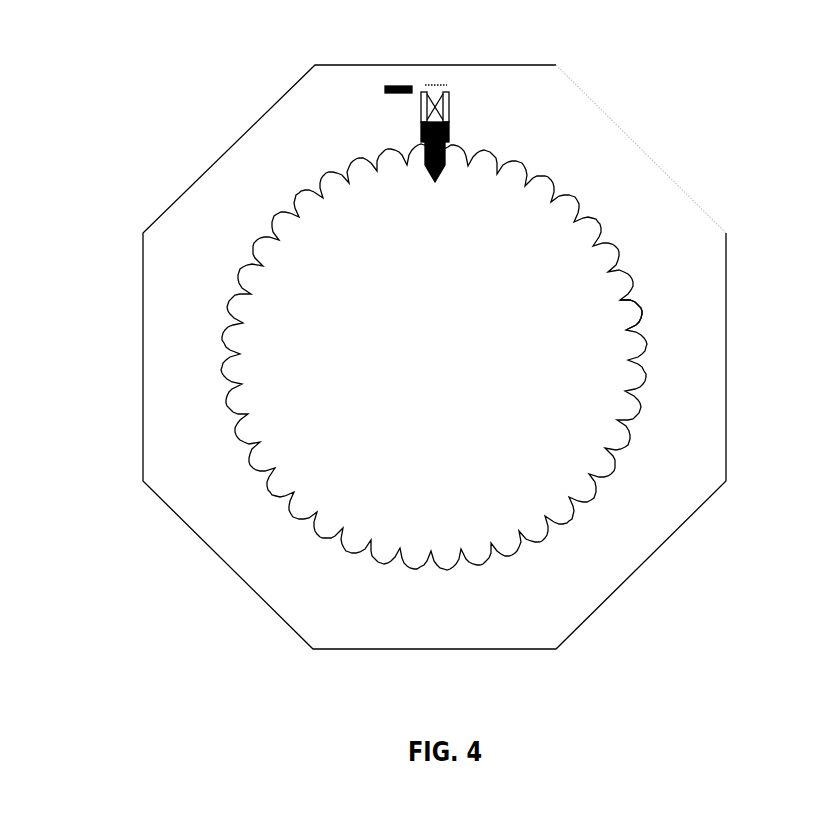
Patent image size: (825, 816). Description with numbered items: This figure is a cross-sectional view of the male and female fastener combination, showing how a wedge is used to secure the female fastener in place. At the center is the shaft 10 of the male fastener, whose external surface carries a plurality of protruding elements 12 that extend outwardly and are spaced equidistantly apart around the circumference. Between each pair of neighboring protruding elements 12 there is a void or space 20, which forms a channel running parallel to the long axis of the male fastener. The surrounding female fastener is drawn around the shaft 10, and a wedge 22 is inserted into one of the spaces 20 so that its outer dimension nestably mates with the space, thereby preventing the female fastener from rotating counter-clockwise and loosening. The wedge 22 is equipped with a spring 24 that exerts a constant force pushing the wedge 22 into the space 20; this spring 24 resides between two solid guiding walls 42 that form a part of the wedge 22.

The shaft 10 is at (434, 357).
The protruding elements 12 is at (597, 226).
The space 20 is at (645, 318).
The wedge 22 is at (480, 110).
The spring 24 is at (440, 86).
The solid guiding walls 42 is at (421, 92).